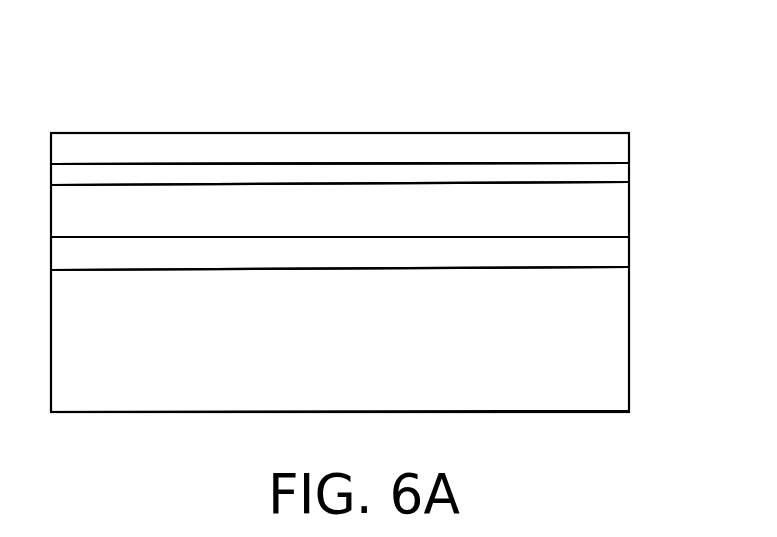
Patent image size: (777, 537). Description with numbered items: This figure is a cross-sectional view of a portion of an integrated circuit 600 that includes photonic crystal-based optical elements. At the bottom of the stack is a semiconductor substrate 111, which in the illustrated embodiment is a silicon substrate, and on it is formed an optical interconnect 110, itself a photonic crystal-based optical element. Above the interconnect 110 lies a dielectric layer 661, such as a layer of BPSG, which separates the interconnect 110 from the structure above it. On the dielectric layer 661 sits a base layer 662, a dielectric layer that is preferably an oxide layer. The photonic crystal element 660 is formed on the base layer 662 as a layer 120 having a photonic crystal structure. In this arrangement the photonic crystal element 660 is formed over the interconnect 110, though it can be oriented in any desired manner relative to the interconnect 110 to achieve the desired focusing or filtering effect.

The integrated circuit 600 is at (611, 97).
The layer 120 is at (566, 140).
The photonic crystal element 660 is at (618, 148).
The base layer 662 is at (618, 172).
The dielectric layer 661 is at (578, 225).
The optical interconnect 110 is at (618, 253).
The semiconductor substrate 111 is at (578, 371).